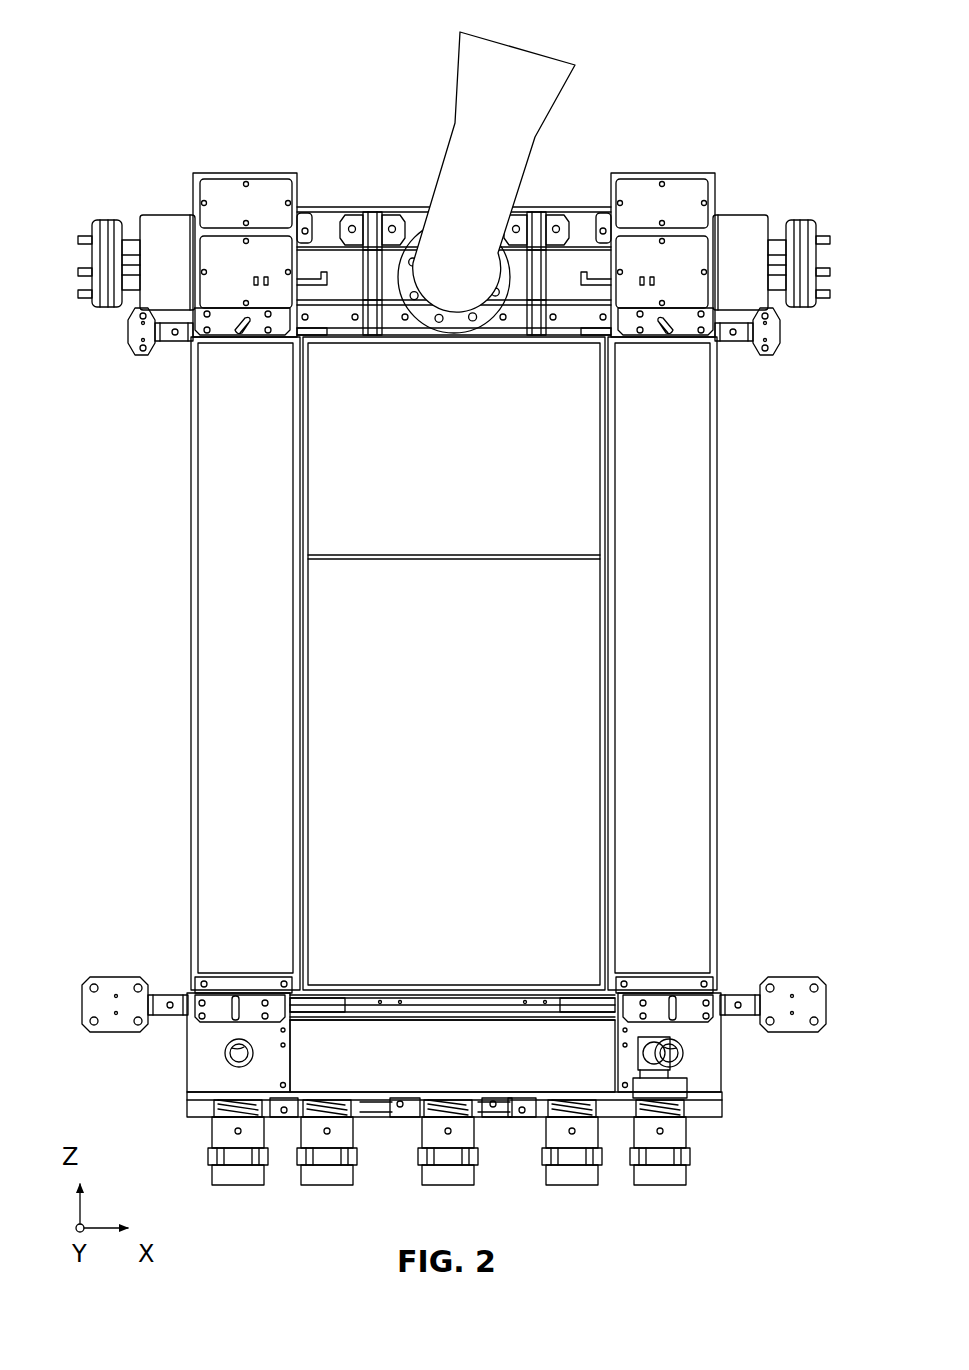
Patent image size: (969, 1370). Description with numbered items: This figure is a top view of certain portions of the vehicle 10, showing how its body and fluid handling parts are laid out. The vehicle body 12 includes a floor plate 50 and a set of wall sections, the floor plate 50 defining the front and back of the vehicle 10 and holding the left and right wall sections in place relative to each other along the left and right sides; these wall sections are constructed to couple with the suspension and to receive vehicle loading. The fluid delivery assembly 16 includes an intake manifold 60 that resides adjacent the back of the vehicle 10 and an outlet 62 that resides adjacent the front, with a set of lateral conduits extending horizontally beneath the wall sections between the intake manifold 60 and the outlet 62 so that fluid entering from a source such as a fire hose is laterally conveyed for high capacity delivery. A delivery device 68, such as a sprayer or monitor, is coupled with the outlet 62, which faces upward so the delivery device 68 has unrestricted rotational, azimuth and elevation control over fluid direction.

The vehicle 10 is at (124, 94).
The vehicle body 12 is at (130, 184).
The fluid delivery assembly 16 is at (146, 1079).
The floor plate 50 is at (412, 1112).
The intake manifold 60 is at (456, 1067).
The outlet 62 is at (411, 232).
The delivery device 68 is at (553, 80).